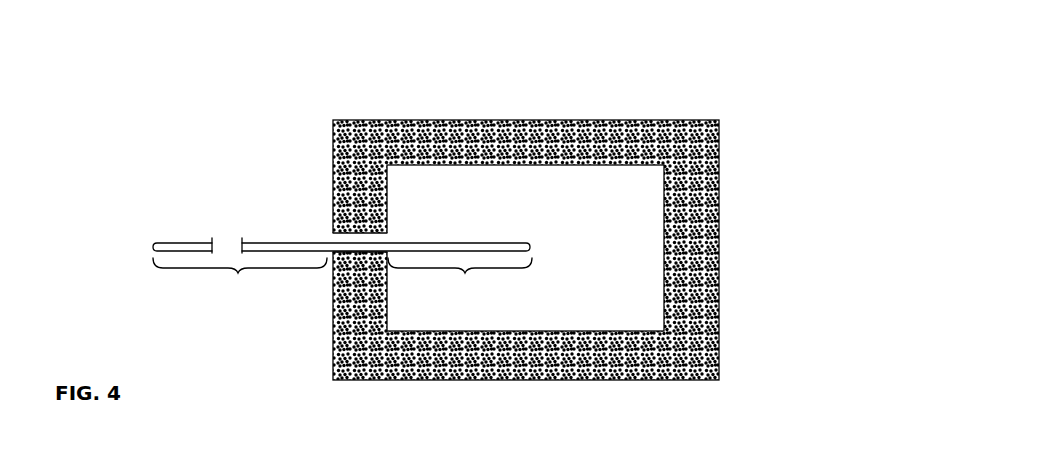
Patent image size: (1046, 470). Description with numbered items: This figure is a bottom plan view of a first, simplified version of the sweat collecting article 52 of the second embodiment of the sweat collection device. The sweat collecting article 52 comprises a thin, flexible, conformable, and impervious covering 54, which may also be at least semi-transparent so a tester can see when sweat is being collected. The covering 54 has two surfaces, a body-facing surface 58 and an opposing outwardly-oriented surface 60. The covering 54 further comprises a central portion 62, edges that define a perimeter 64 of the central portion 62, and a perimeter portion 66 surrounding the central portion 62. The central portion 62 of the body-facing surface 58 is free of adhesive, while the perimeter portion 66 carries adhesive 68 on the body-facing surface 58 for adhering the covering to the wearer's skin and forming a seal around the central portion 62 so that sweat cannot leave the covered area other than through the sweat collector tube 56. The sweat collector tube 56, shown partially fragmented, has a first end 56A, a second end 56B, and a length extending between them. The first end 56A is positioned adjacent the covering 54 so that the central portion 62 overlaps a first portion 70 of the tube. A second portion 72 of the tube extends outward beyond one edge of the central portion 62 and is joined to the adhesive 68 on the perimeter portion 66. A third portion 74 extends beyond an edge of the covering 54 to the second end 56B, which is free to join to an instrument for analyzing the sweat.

The sweat collecting article 52 is at (704, 92).
The covering 54 is at (700, 168).
The sweat collector tube 56 is at (432, 243).
The first end of the sweat collector tube 56A is at (527, 243).
The second end of the sweat collector tube 56B is at (175, 247).
The body-facing surface 58 is at (445, 310).
The outwardly-oriented surface 60 is at (721, 298).
The central portion 62 is at (609, 197).
The perimeter 64 is at (572, 335).
The perimeter portion 66 is at (668, 358).
The adhesive 68 is at (362, 308).
The first portion of the tube 70 is at (465, 273).
The second portion of the tube 72 is at (372, 240).
The third portion of the tube 74 is at (238, 273).